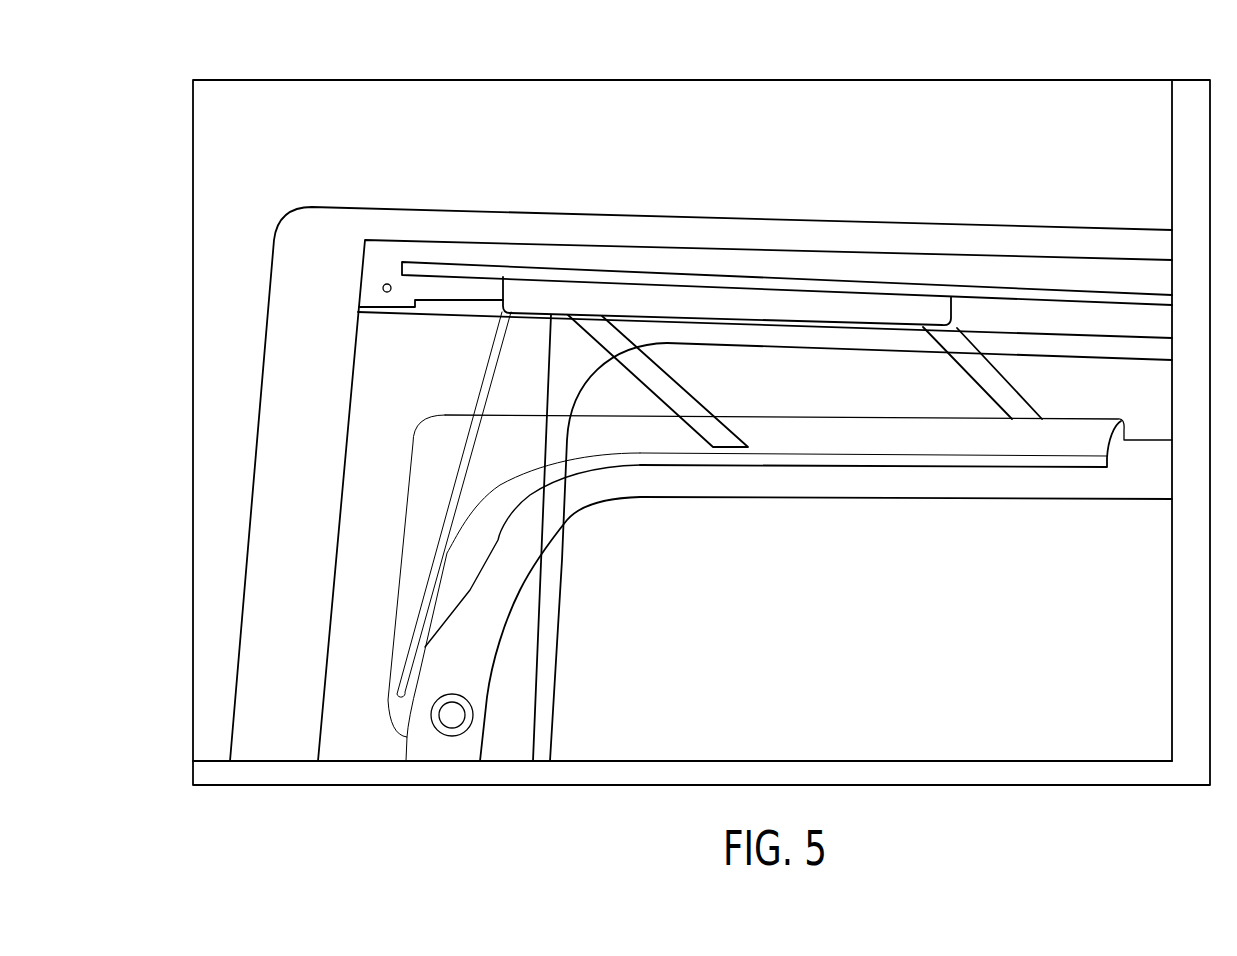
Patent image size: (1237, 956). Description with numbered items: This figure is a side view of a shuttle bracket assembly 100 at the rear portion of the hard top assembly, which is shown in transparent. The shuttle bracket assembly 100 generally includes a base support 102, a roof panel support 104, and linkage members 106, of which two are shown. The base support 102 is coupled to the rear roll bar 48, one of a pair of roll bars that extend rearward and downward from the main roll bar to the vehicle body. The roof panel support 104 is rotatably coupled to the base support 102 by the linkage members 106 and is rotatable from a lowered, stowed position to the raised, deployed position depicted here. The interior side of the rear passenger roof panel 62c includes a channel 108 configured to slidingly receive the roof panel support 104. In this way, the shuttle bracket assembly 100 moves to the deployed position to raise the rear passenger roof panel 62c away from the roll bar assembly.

The shuttle bracket assembly 100 is at (800, 572).
The base support 102 is at (503, 497).
The roof panel support 104 is at (690, 302).
The linkage member 106 is at (682, 402).
The channel 108 is at (1070, 298).
The rear roll bar 48 is at (1085, 483).
The rear passenger roof panel 62c is at (913, 245).